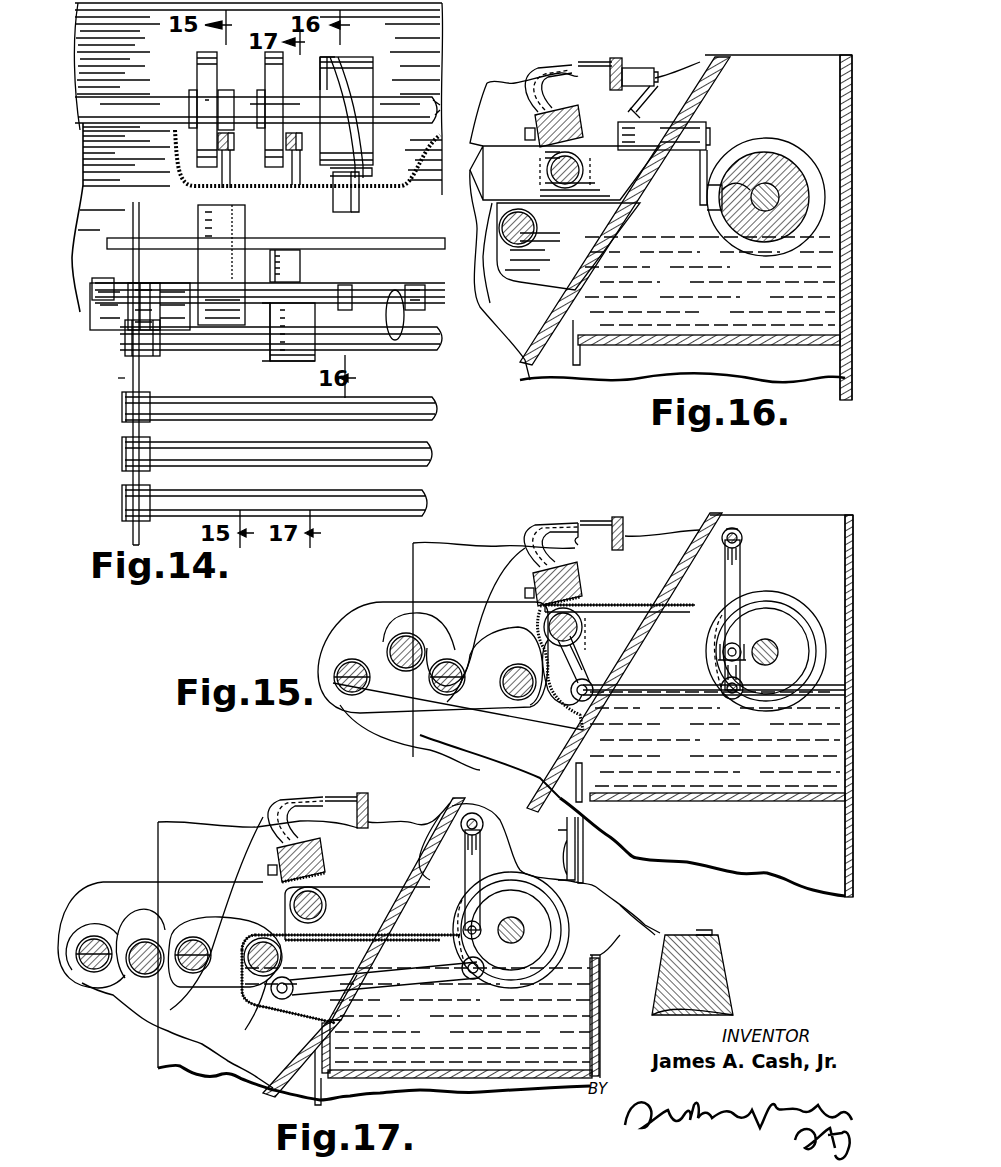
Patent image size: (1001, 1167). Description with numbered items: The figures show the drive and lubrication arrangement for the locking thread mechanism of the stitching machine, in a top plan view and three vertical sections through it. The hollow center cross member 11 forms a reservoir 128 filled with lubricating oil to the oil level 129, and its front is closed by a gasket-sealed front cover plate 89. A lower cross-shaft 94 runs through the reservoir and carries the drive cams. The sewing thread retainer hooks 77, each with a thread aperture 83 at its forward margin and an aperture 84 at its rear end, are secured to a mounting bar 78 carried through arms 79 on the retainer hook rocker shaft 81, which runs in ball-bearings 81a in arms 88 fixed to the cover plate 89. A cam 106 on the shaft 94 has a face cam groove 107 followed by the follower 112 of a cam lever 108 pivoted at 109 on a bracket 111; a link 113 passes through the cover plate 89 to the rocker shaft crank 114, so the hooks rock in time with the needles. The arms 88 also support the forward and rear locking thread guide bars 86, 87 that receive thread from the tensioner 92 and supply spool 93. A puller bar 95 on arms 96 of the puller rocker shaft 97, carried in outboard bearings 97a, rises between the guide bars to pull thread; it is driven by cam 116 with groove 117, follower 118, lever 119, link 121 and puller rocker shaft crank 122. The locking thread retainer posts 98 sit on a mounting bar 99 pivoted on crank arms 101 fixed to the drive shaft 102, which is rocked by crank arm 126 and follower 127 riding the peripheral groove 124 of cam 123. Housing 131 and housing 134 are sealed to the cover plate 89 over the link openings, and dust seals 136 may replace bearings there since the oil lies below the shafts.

In FIG. 16, the center cross member 11 is at (840, 262).
In FIG. 15, the center cross member 11 is at (845, 530).
In FIG. 17, the center cross member 11 is at (600, 990).
In FIG. 14, the sewing thread retainer hook 77 is at (388, 316).
In FIG. 16, the sewing thread retainer hook 77 is at (530, 100).
In FIG. 15, the sewing thread retainer hook 77 is at (538, 527).
In FIG. 17, the sewing thread retainer hook 77 is at (275, 838).
In FIG. 14, the mounting bar 78 is at (100, 312).
In FIG. 16, the mounting bar 78 is at (580, 130).
In FIG. 15, the mounting bar 78 is at (580, 580).
In FIG. 17, the mounting bar 78 is at (325, 860).
In FIG. 14, the arm 79 is at (106, 280).
In FIG. 16, the arm 79 is at (590, 143).
In FIG. 14, the retainer hook rocker shaft 81 is at (318, 290).
In FIG. 16, the retainer hook rocker shaft 81 is at (585, 172).
In FIG. 15, the retainer hook rocker shaft 81 is at (582, 630).
In FIG. 17, the retainer hook rocker shaft 81 is at (327, 906).
In FIG. 14, the ball-bearings 81a is at (146, 283).
In FIG. 15, the aperture 83 is at (525, 540).
In FIG. 15, the aperture 84 is at (578, 538).
In FIG. 14, the forward locking thread guide bar 86 is at (360, 498).
In FIG. 15, the forward locking thread guide bar 86 is at (350, 662).
In FIG. 17, the forward locking thread guide bar 86 is at (98, 937).
In FIG. 14, the rear locking thread guide bar 87 is at (385, 398).
In FIG. 15, the rear locking thread guide bar 87 is at (442, 692).
In FIG. 17, the rear locking thread guide bar 87 is at (190, 970).
In FIG. 14, the arm 88 is at (124, 378).
In FIG. 15, the arm 88 is at (478, 695).
In FIG. 17, the arm 88 is at (138, 880).
In FIG. 16, the front cover plate 89 is at (695, 75).
In FIG. 15, the front cover plate 89 is at (698, 532).
In FIG. 17, the front cover plate 89 is at (413, 823).
In FIG. 17, the adjustable spring loaded tensioner 92 is at (562, 850).
In FIG. 17, the locking thread supply spool 93 is at (722, 945).
In FIG. 14, the lower cross-shaft 94 is at (378, 110).
In FIG. 16, the lower cross-shaft 94 is at (770, 200).
In FIG. 15, the lower cross-shaft 94 is at (778, 642).
In FIG. 17, the lower cross-shaft 94 is at (520, 928).
In FIG. 14, the locking thread puller bar 95 is at (205, 448).
In FIG. 15, the locking thread puller bar 95 is at (400, 668).
In FIG. 17, the locking thread puller bar 95 is at (145, 975).
In FIG. 14, the arm 96 is at (155, 385).
In FIG. 15, the arm 96 is at (435, 620).
In FIG. 17, the arm 96 is at (210, 925).
In FIG. 14, the locking thread puller rocker shaft 97 is at (372, 348).
In FIG. 16, the locking thread puller rocker shaft 97 is at (537, 228).
In FIG. 15, the locking thread puller rocker shaft 97 is at (515, 700).
In FIG. 17, the locking thread puller rocker shaft 97 is at (283, 955).
In FIG. 14, the outboard bearings 97a is at (128, 350).
In FIG. 14, the locking thread retainer post 98 is at (296, 260).
In FIG. 16, the locking thread retainer post 98 is at (598, 58).
In FIG. 15, the locking thread retainer post 98 is at (612, 518).
In FIG. 17, the locking thread retainer post 98 is at (345, 795).
In FIG. 14, the retainer post mounting bar 99 is at (166, 238).
In FIG. 16, the retainer post mounting bar 99 is at (625, 58).
In FIG. 15, the retainer post mounting bar 99 is at (623, 524).
In FIG. 17, the retainer post mounting bar 99 is at (368, 799).
In FIG. 14, the crank arm 101 is at (360, 204).
In FIG. 16, the crank arm 101 is at (645, 108).
In FIG. 16, the retainer post drive shaft 102 is at (706, 128).
In FIG. 14, the cam disc 106 is at (197, 68).
In FIG. 15, the cam disc 106 is at (780, 600).
In FIG. 15, the cam groove 107 is at (805, 625).
In FIG. 14, the cam lever 108 is at (250, 144).
In FIG. 15, the cam lever 108 is at (742, 558).
In FIG. 15, the pivot 109 is at (743, 536).
In FIG. 15, the bracket 111 is at (738, 528).
In FIG. 15, the follower 112 is at (722, 648).
In FIG. 14, the link 113 is at (222, 180).
In FIG. 15, the link 113 is at (660, 683).
In FIG. 15, the rocker shaft crank 114 is at (578, 662).
In FIG. 14, the cam 116 is at (265, 64).
In FIG. 17, the cam 116 is at (523, 875).
In FIG. 17, the groove 117 is at (560, 920).
In FIG. 17, the follower 118 is at (462, 930).
In FIG. 14, the lever 119 is at (312, 155).
In FIG. 17, the lever 119 is at (480, 858).
In FIG. 14, the link 121 is at (290, 178).
In FIG. 17, the link 121 is at (365, 960).
In FIG. 17, the puller rocker shaft crank 122 is at (272, 1005).
In FIG. 14, the cam 123 is at (373, 68).
In FIG. 16, the cam 123 is at (764, 197).
In FIG. 14, the peripheral groove 124 is at (345, 60).
In FIG. 16, the peripheral groove 124 is at (760, 140).
In FIG. 16, the crank arm 126 is at (700, 190).
In FIG. 16, the follower 127 is at (731, 201).
In FIG. 16, the reservoir 128 is at (710, 281).
In FIG. 15, the reservoir 128 is at (715, 739).
In FIG. 17, the reservoir 128 is at (417, 995).
In FIG. 16, the oil level 129 is at (700, 238).
In FIG. 15, the oil level 129 is at (835, 700).
In FIG. 17, the oil level 129 is at (590, 958).
In FIG. 14, the housing 131 is at (240, 222).
In FIG. 16, the housing 131 is at (530, 190).
In FIG. 15, the housing 131 is at (642, 605).
In FIG. 17, the housing 131 is at (285, 914).
In FIG. 14, the housing 134 is at (270, 365).
In FIG. 16, the housing 134 is at (568, 246).
In FIG. 17, the housing 134 is at (246, 1000).
In FIG. 14, the dust seals 136 is at (262, 355).